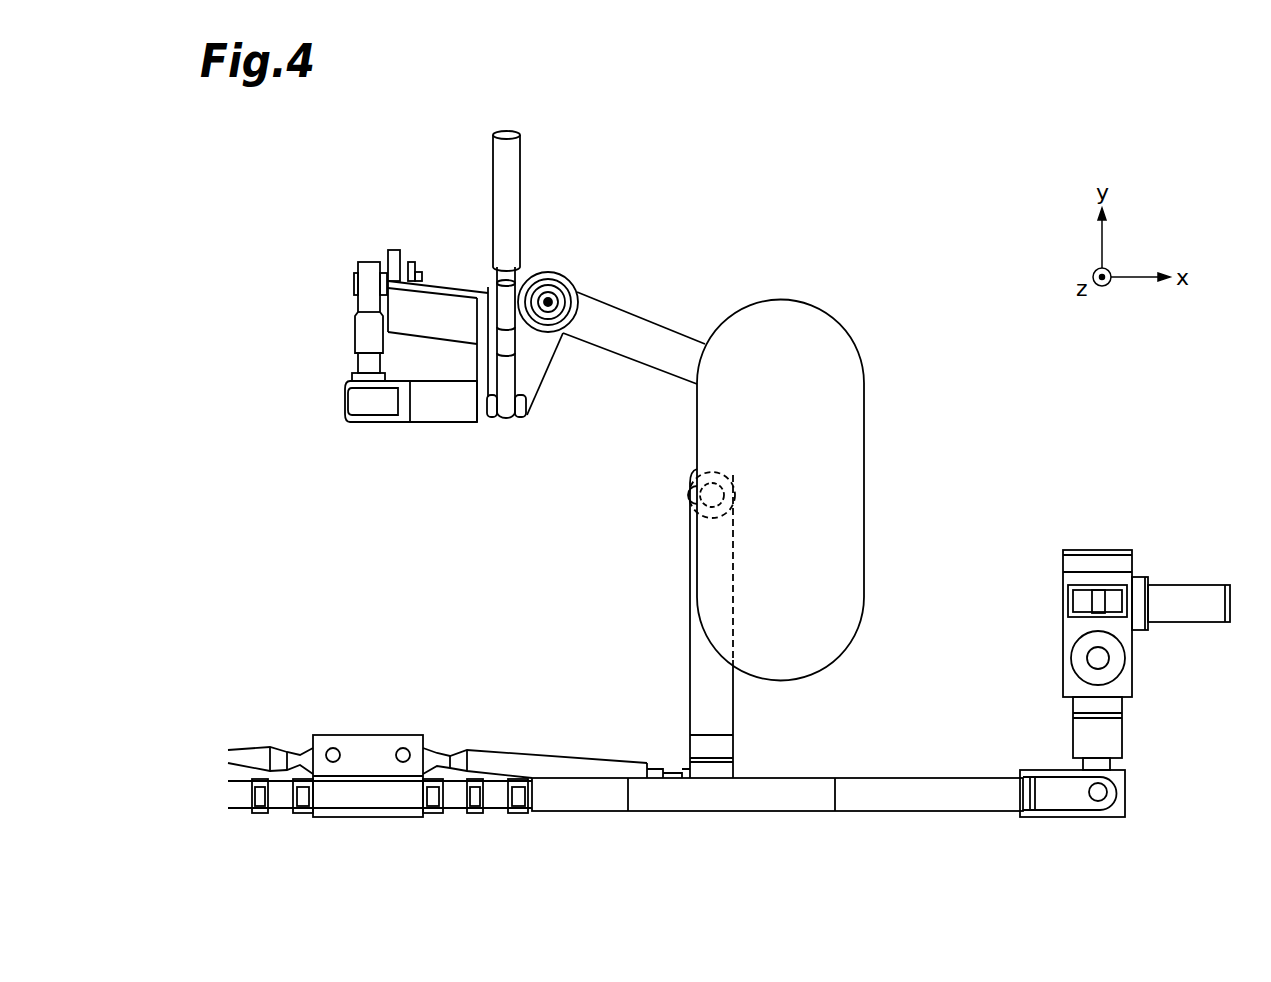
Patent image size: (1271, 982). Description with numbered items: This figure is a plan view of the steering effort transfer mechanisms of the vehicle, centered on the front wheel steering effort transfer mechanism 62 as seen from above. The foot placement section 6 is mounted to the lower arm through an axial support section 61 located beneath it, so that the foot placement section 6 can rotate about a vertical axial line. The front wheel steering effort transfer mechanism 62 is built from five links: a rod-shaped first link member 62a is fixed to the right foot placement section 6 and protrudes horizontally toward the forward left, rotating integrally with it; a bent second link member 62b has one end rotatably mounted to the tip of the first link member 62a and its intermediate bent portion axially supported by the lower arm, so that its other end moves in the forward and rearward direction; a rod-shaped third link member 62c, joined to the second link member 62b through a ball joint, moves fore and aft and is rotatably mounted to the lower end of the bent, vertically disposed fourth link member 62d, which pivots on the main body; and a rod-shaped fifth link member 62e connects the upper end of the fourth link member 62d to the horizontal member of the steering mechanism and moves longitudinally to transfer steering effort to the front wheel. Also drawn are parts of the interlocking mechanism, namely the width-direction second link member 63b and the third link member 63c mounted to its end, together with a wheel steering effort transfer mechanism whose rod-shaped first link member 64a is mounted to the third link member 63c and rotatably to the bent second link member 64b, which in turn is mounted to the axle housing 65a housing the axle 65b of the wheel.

The foot placement section 6 is at (802, 302).
The axial support section 61 is at (697, 495).
The front wheel steering effort transfer mechanism 62 is at (698, 183).
The first link member 62a is at (667, 329).
The second link member 62b is at (548, 366).
The third link member 62c is at (353, 322).
The fourth link member 62d is at (437, 281).
The fifth link member 62e is at (522, 185).
The second link member 63b is at (505, 748).
The third link member 63c is at (377, 818).
The first link member 64a is at (885, 812).
The second link member 64b is at (1123, 735).
The axle housing 65a is at (1063, 568).
The axle 65b is at (1210, 585).